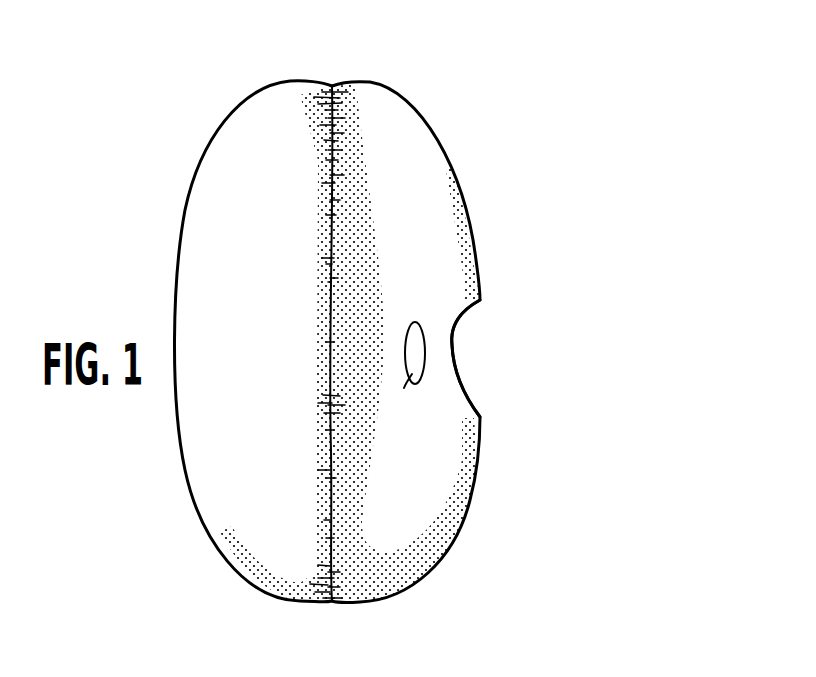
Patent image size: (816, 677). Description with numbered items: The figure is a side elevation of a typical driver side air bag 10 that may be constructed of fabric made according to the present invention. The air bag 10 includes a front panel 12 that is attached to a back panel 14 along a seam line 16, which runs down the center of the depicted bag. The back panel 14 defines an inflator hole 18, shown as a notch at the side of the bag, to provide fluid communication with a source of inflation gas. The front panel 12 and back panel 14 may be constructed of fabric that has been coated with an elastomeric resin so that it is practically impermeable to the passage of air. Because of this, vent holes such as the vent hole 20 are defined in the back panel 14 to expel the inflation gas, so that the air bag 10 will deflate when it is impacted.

The driver side air bag 10 is at (407, 55).
The front panel 12 is at (263, 207).
The back panel 14 is at (410, 188).
The seam line 16 is at (333, 340).
The inflator hole 18 is at (453, 338).
The vent hole 20 is at (414, 375).